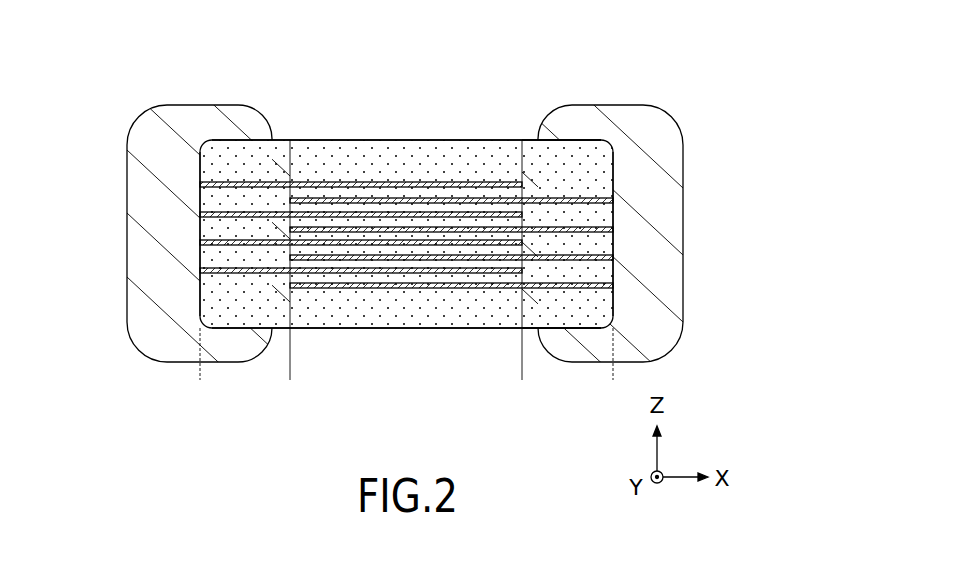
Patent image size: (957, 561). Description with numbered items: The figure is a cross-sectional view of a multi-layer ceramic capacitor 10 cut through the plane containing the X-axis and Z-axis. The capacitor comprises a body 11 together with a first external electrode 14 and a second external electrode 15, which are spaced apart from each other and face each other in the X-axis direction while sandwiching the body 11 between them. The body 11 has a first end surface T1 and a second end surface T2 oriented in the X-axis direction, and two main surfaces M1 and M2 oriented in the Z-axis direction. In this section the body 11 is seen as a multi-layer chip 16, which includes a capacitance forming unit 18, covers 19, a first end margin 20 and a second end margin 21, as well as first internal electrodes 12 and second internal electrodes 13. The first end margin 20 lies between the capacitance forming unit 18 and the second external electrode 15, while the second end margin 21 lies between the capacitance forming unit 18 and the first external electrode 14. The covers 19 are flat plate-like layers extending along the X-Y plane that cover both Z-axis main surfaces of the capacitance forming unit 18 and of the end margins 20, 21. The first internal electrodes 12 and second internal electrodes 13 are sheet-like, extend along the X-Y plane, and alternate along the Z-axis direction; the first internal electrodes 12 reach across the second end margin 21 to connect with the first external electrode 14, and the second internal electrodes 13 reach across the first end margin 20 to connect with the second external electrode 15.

The multi-layer ceramic capacitor 10 is at (152, 79).
The body 11 is at (437, 93).
The first internal electrodes 12 is at (363, 185).
The second internal electrodes 13 is at (500, 198).
The first external electrode 14 is at (140, 188).
The second external electrode 15 is at (683, 187).
The multi-layer chip 16 is at (382, 328).
The capacitance forming unit 18 is at (406, 182).
The covers 19 is at (611, 140).
The first end margin 20 is at (522, 374).
The second end margin 21 is at (200, 374).
The main surface M1 is at (411, 140).
The main surface M2 is at (430, 328).
The first end surface T1 is at (200, 235).
The second end surface T2 is at (613, 240).